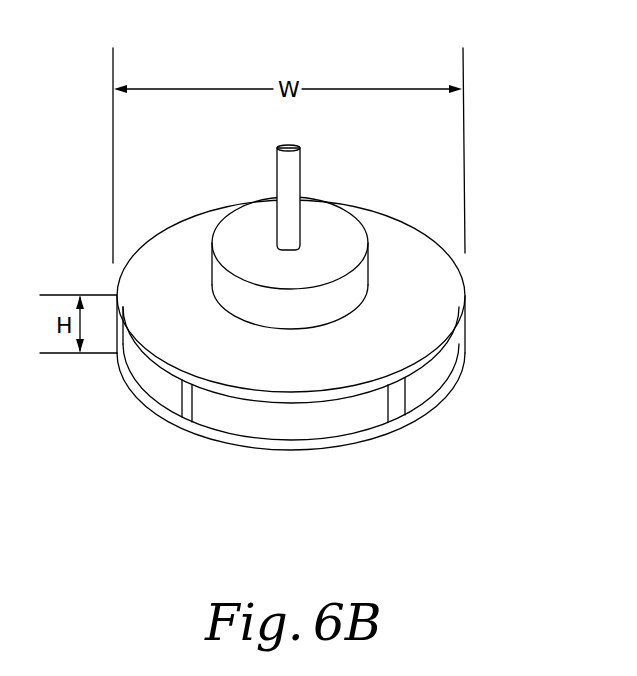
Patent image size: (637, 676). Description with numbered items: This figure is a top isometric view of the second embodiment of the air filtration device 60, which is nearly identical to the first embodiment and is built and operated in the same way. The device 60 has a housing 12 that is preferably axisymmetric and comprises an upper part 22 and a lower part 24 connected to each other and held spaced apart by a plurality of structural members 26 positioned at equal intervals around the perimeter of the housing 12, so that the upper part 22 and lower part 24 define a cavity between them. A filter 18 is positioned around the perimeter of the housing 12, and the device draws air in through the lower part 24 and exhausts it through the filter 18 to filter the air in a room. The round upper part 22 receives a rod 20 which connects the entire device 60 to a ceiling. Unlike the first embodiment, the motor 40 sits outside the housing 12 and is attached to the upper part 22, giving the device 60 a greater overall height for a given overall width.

The device 60 is at (449, 147).
The upper part 22 is at (397, 230).
The housing 12 is at (144, 352).
The lower part 24 is at (400, 432).
The structural members 26 is at (188, 412).
The filter 18 is at (283, 433).
The motor 40 is at (368, 265).
The rod 20 is at (293, 172).